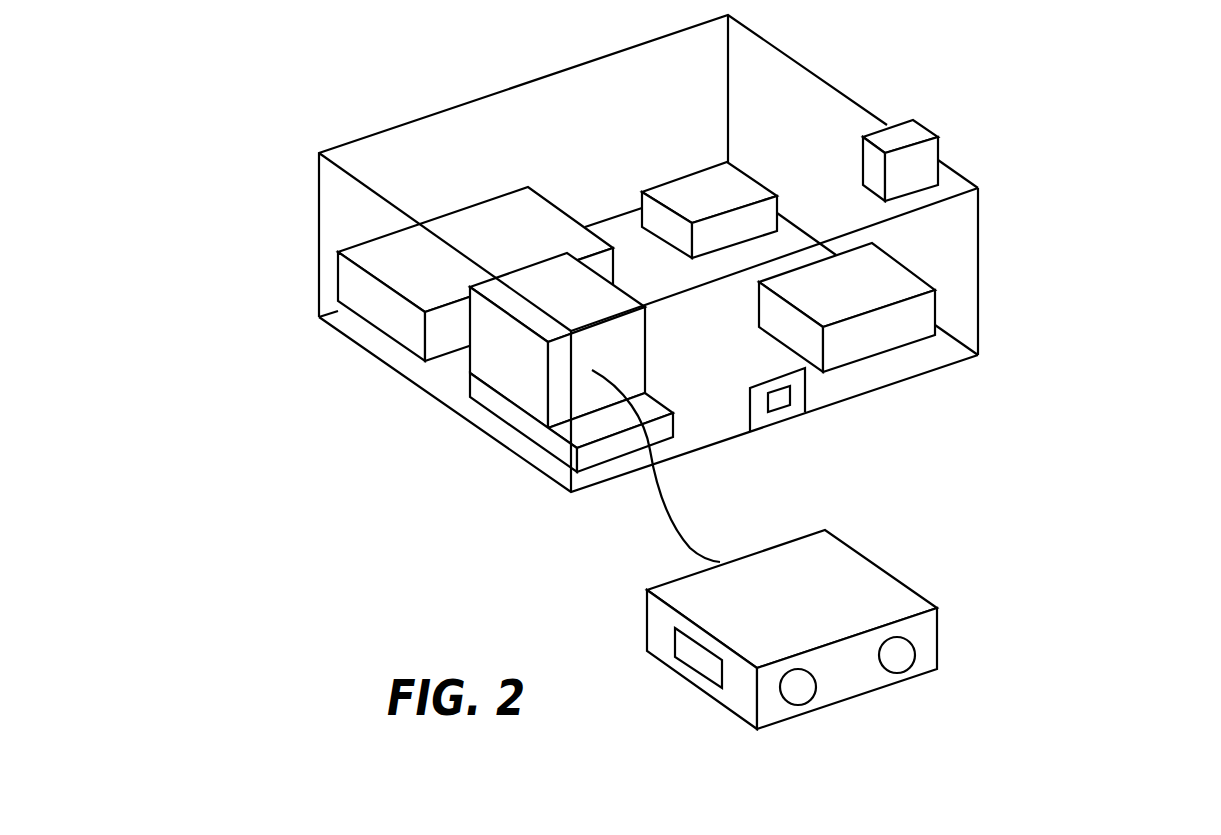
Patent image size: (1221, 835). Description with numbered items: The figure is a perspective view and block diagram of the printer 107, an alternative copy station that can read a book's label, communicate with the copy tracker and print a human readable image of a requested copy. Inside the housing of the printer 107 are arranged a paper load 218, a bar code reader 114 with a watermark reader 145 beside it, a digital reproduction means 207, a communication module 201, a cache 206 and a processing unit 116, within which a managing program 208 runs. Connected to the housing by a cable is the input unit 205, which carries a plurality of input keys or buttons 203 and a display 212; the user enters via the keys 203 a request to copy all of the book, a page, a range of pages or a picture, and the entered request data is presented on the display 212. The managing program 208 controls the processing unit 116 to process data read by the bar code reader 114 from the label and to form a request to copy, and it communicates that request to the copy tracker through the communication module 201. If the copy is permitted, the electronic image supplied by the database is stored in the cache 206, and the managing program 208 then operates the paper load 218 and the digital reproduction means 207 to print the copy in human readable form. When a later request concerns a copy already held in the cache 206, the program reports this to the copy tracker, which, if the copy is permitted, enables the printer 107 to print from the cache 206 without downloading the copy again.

The printer 107 is at (318, 216).
The paper load 218 is at (386, 311).
The bar code reader 114 is at (522, 365).
The watermark reader 145 is at (610, 448).
The digital reproduction means 207 is at (752, 177).
The communication module 201 is at (932, 128).
The cache 206 is at (920, 277).
The processing unit 116 is at (815, 398).
The managing program 208 is at (780, 398).
The input unit 205 is at (895, 578).
The display 212 is at (700, 657).
The input keys or buttons 203 is at (798, 687).